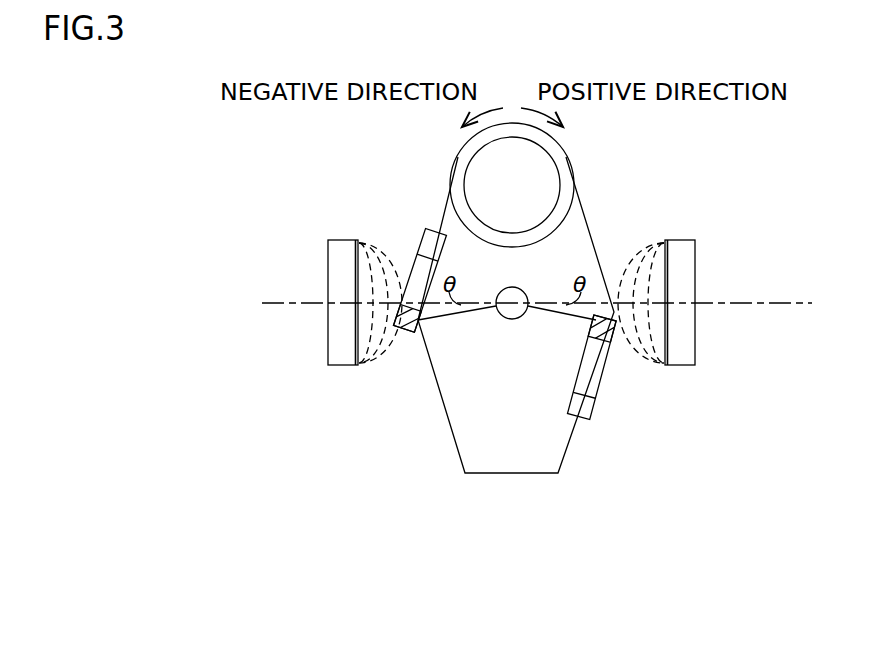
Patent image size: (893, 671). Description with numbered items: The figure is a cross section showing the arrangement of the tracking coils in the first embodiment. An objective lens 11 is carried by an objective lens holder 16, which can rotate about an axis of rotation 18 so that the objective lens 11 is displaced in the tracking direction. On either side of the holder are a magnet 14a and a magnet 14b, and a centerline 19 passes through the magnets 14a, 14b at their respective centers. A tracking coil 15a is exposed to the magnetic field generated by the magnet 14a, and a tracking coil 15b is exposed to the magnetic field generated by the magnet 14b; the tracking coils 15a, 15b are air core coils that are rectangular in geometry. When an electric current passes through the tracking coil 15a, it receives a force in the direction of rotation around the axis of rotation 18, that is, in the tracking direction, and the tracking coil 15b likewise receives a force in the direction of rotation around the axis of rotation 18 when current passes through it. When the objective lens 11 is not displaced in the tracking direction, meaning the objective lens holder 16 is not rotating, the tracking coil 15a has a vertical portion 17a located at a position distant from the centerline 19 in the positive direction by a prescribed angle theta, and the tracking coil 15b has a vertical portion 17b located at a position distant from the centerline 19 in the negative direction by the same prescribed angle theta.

The objective lens 11 is at (567, 155).
The magnet 14a is at (695, 268).
The magnet 14b is at (328, 280).
The tracking coil 15a is at (595, 363).
The tracking coil 15b is at (423, 270).
The objective lens holder 16 is at (490, 474).
The vertical portion 17a is at (613, 338).
The vertical portion 17b is at (406, 336).
The axis of rotation 18 is at (502, 316).
The centerline 19 is at (748, 304).